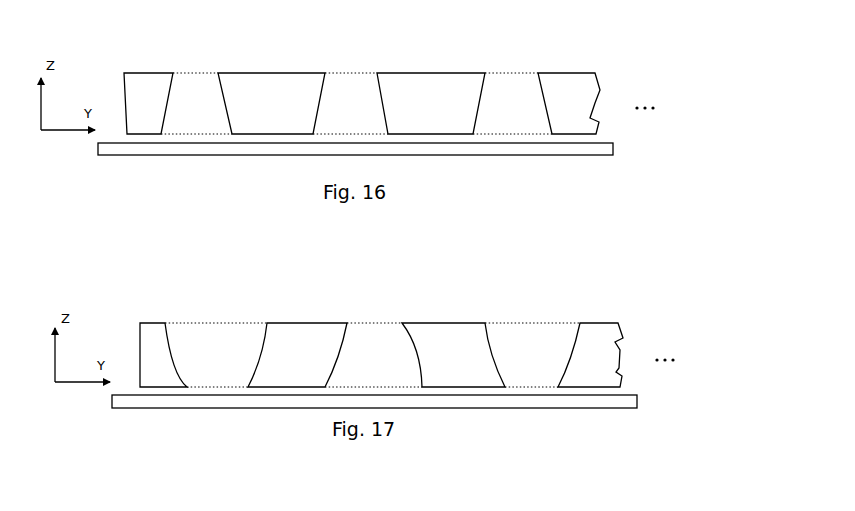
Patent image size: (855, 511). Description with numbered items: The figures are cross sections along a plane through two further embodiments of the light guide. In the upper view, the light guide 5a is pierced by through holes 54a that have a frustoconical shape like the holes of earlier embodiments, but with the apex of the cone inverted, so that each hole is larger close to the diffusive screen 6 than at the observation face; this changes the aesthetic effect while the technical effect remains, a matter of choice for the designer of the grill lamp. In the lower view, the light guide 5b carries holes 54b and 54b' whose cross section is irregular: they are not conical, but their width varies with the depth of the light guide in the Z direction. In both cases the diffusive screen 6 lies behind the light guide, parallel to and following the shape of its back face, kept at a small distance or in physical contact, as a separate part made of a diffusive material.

In FIG. 16, the light guide 5a is at (440, 87).
In FIG. 16, the through holes 54a is at (368, 98).
In FIG. 17, the light guide 5b is at (461, 335).
In FIG. 17, the holes 54b is at (381, 335).
In FIG. 17, the holes 54b' is at (376, 339).
In FIG. 16, the diffusive screen 6 is at (603, 147).
In FIG. 17, the diffusive screen 6 is at (625, 398).